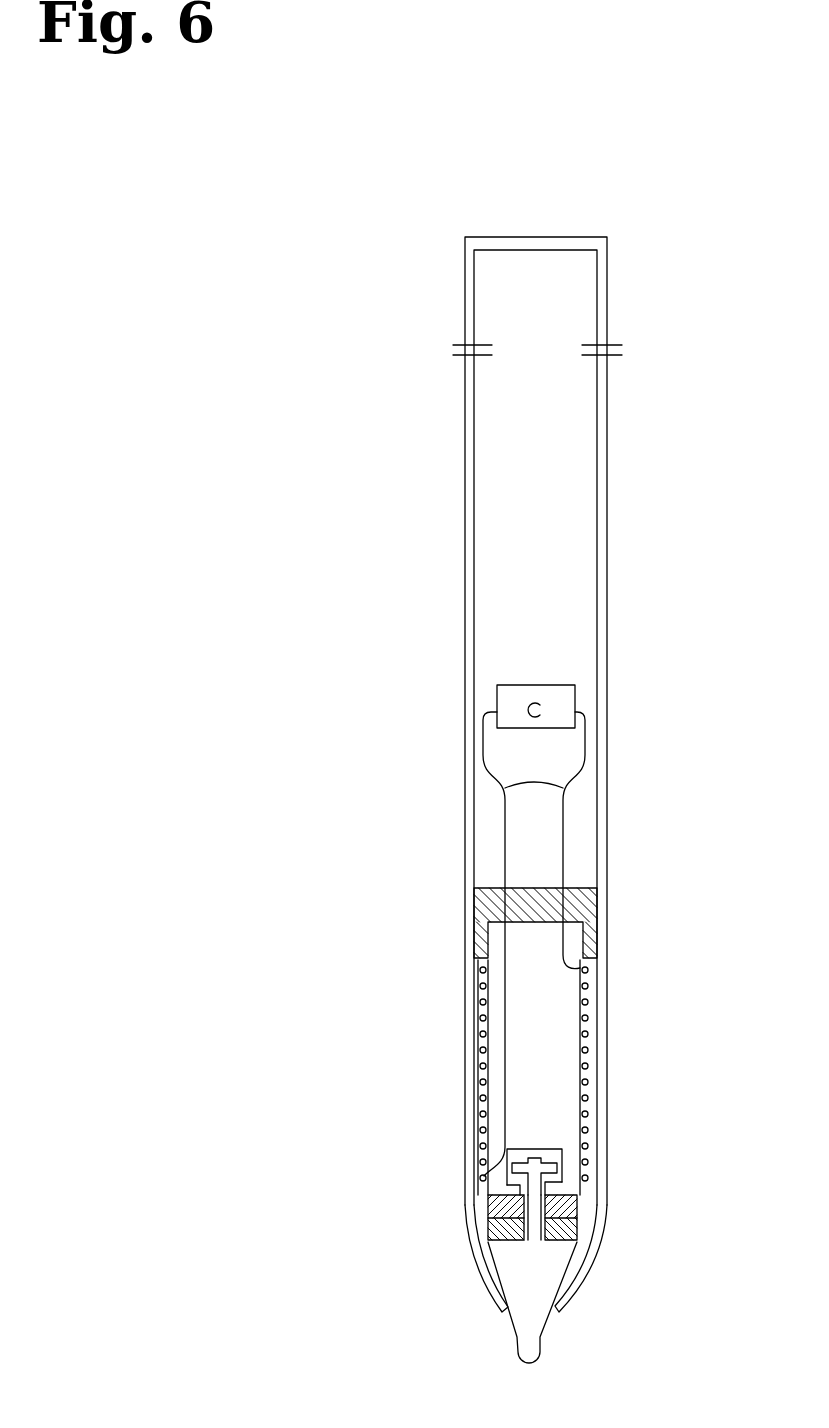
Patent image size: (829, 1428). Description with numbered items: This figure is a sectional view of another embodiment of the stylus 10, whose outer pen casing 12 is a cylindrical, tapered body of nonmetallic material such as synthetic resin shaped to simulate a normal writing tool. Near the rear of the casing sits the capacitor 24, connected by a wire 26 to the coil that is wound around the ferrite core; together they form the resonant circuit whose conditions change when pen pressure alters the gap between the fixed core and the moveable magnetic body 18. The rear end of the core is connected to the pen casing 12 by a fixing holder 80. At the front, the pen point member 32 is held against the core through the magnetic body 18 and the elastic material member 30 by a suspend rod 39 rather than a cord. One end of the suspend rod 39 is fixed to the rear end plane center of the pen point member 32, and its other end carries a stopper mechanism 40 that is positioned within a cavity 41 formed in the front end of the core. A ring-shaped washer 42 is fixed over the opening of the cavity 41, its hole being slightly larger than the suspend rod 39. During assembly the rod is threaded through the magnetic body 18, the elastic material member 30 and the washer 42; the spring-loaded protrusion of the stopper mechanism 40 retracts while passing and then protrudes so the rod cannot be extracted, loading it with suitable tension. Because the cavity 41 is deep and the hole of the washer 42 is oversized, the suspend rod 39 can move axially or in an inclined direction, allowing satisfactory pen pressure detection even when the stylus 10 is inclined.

The stylus 10 is at (662, 485).
The pen casing 12 is at (465, 498).
The moveable magnetic body 18 is at (572, 1233).
The capacitor 24 is at (560, 703).
The wire 26 is at (565, 827).
The elastic material member 30 is at (562, 1210).
The pen point member 32 is at (543, 1278).
The suspend rod 39 is at (535, 1206).
The stopper mechanism 40 is at (552, 1170).
The cavity 41 is at (550, 1153).
The washer 42 is at (553, 1190).
The fixing holder 80 is at (580, 908).